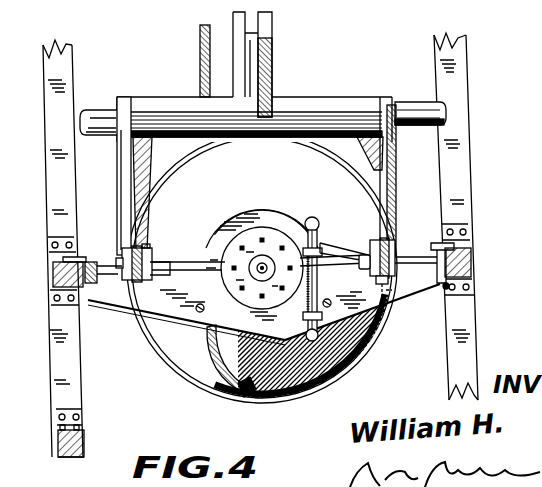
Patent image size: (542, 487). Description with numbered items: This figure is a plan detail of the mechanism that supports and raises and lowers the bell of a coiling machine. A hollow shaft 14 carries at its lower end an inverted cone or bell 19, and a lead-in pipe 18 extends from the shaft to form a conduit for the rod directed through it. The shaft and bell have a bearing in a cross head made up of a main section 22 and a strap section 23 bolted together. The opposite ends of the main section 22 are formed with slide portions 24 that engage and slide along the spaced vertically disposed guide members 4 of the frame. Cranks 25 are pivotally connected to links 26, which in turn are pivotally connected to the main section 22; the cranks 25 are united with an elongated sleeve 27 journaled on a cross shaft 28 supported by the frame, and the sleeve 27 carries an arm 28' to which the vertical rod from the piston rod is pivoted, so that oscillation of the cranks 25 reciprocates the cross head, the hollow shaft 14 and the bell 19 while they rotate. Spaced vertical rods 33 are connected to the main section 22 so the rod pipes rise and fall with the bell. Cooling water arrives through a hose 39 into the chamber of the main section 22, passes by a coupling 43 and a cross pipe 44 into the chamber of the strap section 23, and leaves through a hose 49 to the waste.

The guide members 4 is at (53, 274).
The hollow shaft 14 is at (256, 274).
The lead-in pipe 18 is at (266, 263).
The bell 19 is at (165, 338).
The main section 22 is at (292, 332).
The strap section 23 is at (232, 214).
The slide portions 24 is at (63, 259).
The cranks 25 is at (122, 190).
The links 26 is at (140, 260).
The elongated sleeve 27 is at (300, 100).
The cross shaft 28 is at (298, 106).
The arm 28' is at (274, 63).
The rods 33 is at (207, 301).
The hose 39 is at (216, 371).
The coupling 43 is at (322, 338).
The cross pipe 44 is at (323, 247).
The hose 49 is at (200, 48).